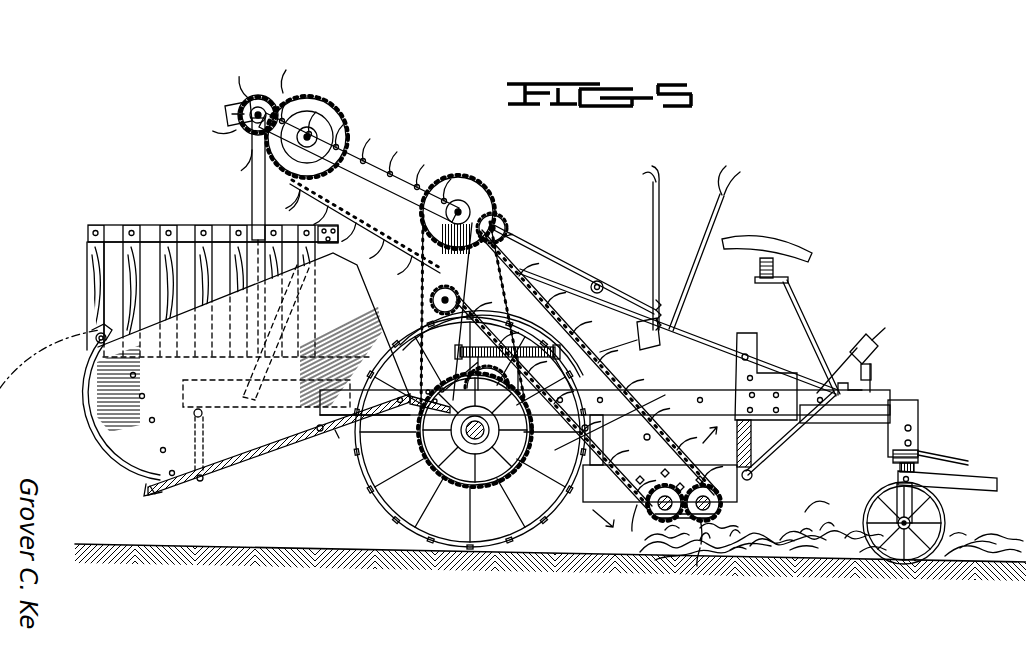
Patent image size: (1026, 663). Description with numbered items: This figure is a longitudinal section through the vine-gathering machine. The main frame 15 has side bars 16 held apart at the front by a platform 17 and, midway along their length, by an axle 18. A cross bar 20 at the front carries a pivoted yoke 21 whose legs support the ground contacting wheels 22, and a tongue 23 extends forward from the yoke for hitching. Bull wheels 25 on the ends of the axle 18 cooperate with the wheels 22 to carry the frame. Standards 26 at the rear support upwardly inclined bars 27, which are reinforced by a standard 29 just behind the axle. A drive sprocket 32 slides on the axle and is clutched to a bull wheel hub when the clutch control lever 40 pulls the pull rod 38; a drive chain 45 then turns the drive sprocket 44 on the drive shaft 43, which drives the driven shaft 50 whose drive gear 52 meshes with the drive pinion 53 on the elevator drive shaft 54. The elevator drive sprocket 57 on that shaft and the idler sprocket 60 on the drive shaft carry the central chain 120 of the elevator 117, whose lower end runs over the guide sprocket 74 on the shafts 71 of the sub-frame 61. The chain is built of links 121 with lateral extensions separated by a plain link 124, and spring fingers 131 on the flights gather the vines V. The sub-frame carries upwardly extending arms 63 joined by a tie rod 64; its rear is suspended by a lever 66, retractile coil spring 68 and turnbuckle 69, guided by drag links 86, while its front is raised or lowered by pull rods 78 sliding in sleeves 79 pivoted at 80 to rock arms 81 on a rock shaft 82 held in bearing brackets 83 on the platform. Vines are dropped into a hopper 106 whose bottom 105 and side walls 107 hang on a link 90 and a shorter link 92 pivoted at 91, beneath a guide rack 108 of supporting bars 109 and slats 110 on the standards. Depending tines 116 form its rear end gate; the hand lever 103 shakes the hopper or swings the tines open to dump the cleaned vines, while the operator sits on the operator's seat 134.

The main frame 15 is at (400, 421).
The side bars 16 is at (688, 395).
The platform 17 is at (870, 418).
The axle 18 is at (430, 462).
The cross bar 20 is at (893, 457).
The inverted U-shaped yoke 21 is at (898, 471).
The ground contacting wheels 22 is at (945, 528).
The tongue 23 is at (975, 476).
The bull wheels 25 is at (385, 512).
The standards 26 is at (253, 180).
The upwardly inclined bars 27 is at (705, 347).
The standard 29 is at (458, 270).
The drive sprocket 32 is at (483, 490).
The pull rod 38 is at (636, 348).
The clutch control lever 40 is at (713, 222).
The drive shaft 43 is at (463, 205).
The drive sprocket 44 is at (502, 222).
The drive chain 45 is at (428, 252).
The driven shaft 50 is at (335, 128).
The drive gear 52 is at (312, 120).
The drive pinion 53 is at (267, 97).
The elevator drive shaft 54 is at (245, 116).
The elevator drive sprocket 57 is at (256, 113).
The idler sprocket 60 is at (483, 200).
The sub-frame 61 is at (643, 475).
The upwardly extending arms 63 is at (748, 340).
The tie rod 64 is at (750, 357).
The lever 66 is at (588, 426).
The retractile coil spring 68 is at (527, 320).
The turnbuckle 69 is at (403, 332).
The shafts 71 is at (650, 507).
The guide sprocket 74 is at (664, 520).
The pull rod 78 is at (795, 445).
The sleeves 79 is at (865, 344).
The pivot 80 is at (875, 356).
The rock arms 81 is at (871, 371).
The rock shaft 82 is at (876, 386).
The bearing brackets 83 is at (847, 372).
The drag links 86 is at (643, 440).
The link 90 is at (212, 477).
The pivot 91 is at (320, 431).
The link 92 is at (337, 439).
The hand lever 103 is at (654, 217).
The bottom 105 is at (258, 457).
The hopper 106 is at (165, 497).
The side walls 107 is at (118, 450).
The guide rack 108 is at (186, 215).
The supporting bars 109 is at (150, 225).
The slats 110 is at (132, 272).
The tines 116 is at (84, 398).
The elevator 117 is at (407, 157).
The central chain 120 is at (519, 237).
The links 121 is at (565, 283).
The link 124 is at (553, 270).
The spring fingers 131 is at (387, 129).
The operator's seat 134 is at (770, 246).
The vines V is at (813, 503).